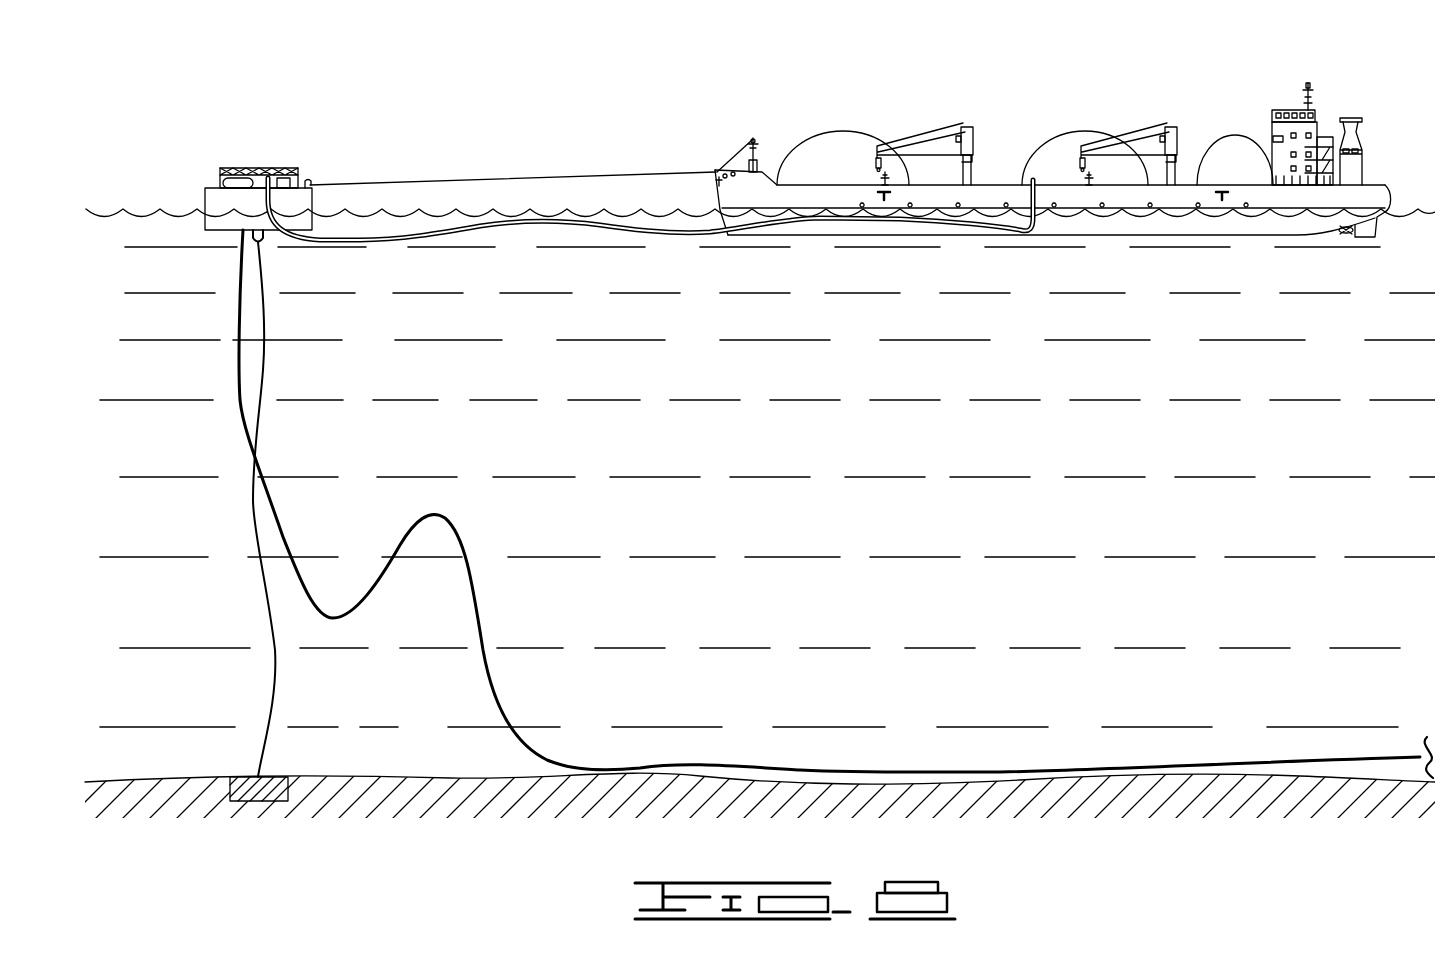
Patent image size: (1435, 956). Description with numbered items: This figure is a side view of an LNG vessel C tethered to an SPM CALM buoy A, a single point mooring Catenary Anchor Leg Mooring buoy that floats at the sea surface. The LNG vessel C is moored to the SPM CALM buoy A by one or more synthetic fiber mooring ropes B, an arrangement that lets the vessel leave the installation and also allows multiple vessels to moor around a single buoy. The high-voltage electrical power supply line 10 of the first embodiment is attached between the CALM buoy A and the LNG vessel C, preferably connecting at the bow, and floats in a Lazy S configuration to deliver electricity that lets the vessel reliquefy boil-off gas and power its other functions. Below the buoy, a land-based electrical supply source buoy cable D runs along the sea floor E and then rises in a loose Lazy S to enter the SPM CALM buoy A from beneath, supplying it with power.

The SPM CALM buoy A is at (250, 168).
The synthetic fiber mooring rope B is at (612, 176).
The LNG vessel C is at (1197, 187).
The buoy cable D is at (463, 535).
The sea floor E is at (448, 778).
The high-voltage electrical power supply line 10 is at (360, 233).